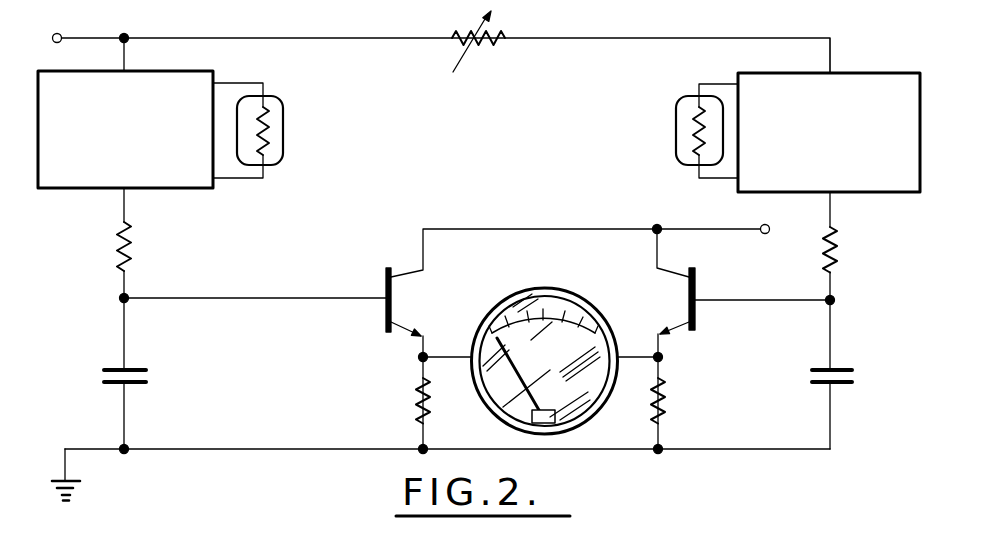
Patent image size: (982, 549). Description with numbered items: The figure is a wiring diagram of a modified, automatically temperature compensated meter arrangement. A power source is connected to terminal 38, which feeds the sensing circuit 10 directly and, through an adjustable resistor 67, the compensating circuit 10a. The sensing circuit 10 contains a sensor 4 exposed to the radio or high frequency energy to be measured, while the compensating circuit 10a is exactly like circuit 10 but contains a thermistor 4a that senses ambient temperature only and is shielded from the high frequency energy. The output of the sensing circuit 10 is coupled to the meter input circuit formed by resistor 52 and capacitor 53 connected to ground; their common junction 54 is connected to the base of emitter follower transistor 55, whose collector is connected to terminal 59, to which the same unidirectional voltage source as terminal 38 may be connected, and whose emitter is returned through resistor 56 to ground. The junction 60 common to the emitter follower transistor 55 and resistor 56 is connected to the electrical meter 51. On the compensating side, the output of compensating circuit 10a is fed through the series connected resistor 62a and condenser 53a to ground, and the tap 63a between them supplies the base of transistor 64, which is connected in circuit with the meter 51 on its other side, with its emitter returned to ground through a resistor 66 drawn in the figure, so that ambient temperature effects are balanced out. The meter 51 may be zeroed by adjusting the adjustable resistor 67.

The terminal 38 is at (61, 33).
The sensing circuit 10 is at (53, 190).
The sensor 4 is at (286, 116).
The adjustable resistor 67 is at (492, 50).
The compensating circuit 10a is at (876, 73).
The thermistor 4a is at (676, 140).
The resistor 52 is at (132, 240).
The junction 54 is at (121, 298).
The capacitor 53 is at (147, 382).
The emitter follower transistor 55 is at (386, 288).
The junction 60 is at (419, 357).
The meter 51 is at (545, 287).
The resistor 56 is at (418, 392).
The terminal 59 is at (765, 235).
The resistor 62a is at (837, 238).
The tap 63a is at (836, 300).
The transistor 64 is at (697, 312).
The condenser 53a is at (853, 376).
The resistor 66 is at (666, 412).